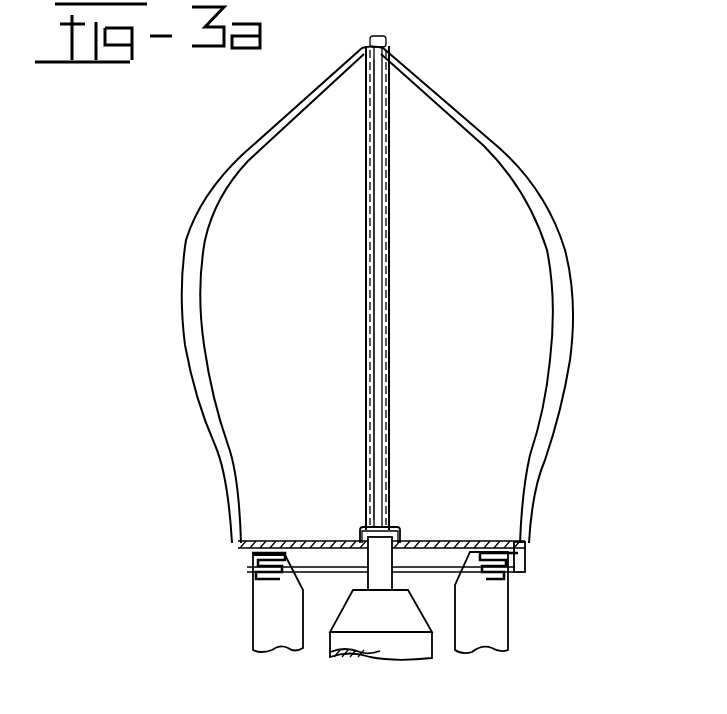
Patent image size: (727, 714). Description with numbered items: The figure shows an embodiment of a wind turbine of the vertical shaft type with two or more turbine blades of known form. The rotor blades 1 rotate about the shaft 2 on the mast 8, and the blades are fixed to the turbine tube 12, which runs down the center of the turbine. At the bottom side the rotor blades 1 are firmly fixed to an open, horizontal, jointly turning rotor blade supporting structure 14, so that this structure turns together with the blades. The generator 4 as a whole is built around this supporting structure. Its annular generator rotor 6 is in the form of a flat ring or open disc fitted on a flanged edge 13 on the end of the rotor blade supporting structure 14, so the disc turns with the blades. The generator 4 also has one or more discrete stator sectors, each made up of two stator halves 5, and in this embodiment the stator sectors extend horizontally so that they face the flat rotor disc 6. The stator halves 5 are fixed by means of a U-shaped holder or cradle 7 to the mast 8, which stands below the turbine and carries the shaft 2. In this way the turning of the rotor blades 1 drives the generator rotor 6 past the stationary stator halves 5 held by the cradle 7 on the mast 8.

The rotor blades 1 is at (538, 187).
The shaft 2 is at (384, 43).
The generator 4 is at (226, 556).
The stator halves 5 is at (500, 552).
The generator rotor 6 is at (250, 578).
The U-shaped holder 7 is at (258, 610).
The mast 8 is at (408, 645).
The turbine tube 12 is at (390, 357).
The flanged edge 13 is at (525, 553).
The rotor blade supporting structure 14 is at (442, 544).